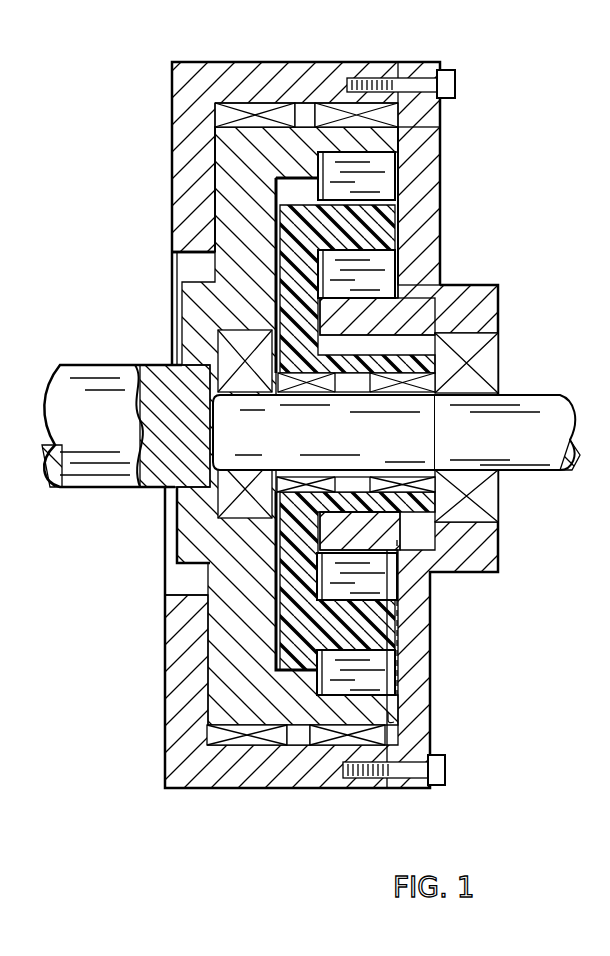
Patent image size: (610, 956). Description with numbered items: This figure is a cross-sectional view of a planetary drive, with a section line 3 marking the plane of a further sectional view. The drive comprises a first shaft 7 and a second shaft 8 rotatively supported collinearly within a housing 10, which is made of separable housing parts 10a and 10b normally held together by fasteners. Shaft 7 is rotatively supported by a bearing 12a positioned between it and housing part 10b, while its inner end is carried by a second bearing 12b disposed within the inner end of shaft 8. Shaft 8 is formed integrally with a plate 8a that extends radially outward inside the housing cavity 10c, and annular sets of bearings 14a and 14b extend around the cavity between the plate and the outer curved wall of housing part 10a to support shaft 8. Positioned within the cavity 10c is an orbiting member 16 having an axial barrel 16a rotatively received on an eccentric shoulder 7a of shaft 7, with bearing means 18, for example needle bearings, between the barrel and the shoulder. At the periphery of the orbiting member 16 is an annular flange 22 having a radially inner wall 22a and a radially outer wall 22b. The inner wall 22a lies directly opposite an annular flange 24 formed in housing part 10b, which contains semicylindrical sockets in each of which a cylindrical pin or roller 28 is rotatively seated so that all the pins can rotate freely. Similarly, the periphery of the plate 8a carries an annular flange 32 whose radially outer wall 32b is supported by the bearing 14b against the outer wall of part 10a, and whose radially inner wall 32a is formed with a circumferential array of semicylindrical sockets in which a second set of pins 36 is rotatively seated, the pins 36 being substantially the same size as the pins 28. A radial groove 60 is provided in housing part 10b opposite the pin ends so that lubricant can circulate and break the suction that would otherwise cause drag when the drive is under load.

The section line 3- 3 is at (328, 39).
The first shaft 7 is at (525, 412).
The eccentric shoulder 7a is at (418, 434).
The second shaft 8 is at (85, 380).
The plate 8a is at (217, 300).
The housing 10 is at (148, 108).
The housing part 10a is at (335, 62).
The housing part 10b is at (440, 62).
The housing cavity 10c is at (300, 100).
The bearing 12a is at (487, 512).
The second bearing 12b is at (210, 505).
The annular set of bearings 14a is at (225, 100).
The annular set of bearings 14b is at (400, 118).
The orbiting member 16 is at (300, 270).
The axial barrel 16a is at (404, 340).
The bearing means 18 is at (400, 524).
The annular flange 22 is at (415, 226).
The radially inner wall 22a is at (408, 250).
The radially outer wall 22b is at (218, 206).
The annular flange 24 is at (328, 336).
The cylindrical pin 28 is at (383, 270).
The annular flange 32 is at (410, 150).
The radially inner wall 32a is at (215, 186).
The radially outer wall 32b is at (380, 78).
The pin 36 is at (385, 183).
The radial groove 60 is at (425, 698).